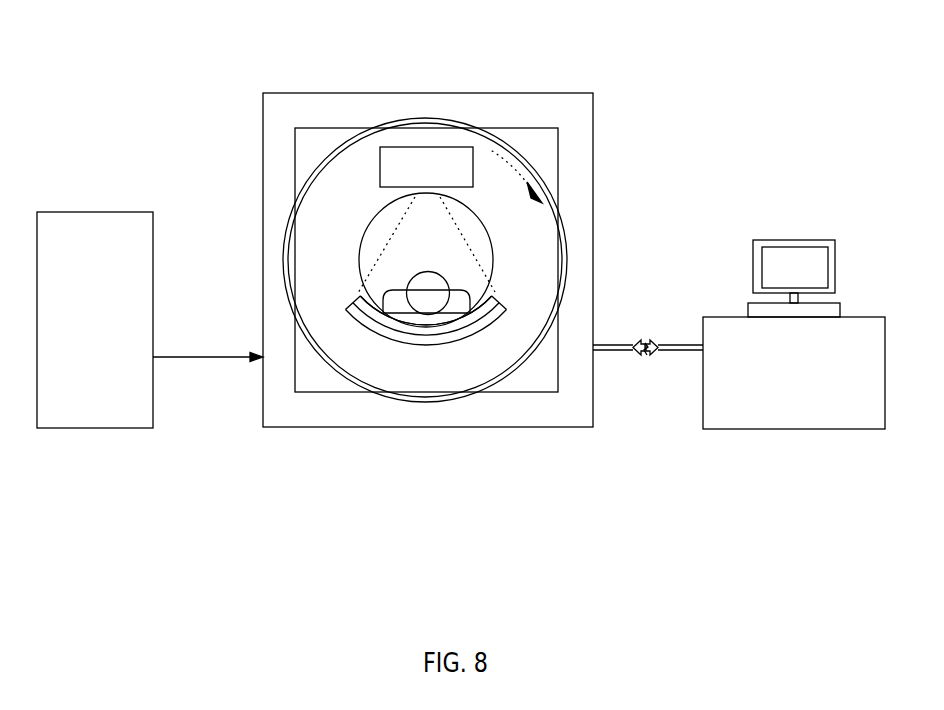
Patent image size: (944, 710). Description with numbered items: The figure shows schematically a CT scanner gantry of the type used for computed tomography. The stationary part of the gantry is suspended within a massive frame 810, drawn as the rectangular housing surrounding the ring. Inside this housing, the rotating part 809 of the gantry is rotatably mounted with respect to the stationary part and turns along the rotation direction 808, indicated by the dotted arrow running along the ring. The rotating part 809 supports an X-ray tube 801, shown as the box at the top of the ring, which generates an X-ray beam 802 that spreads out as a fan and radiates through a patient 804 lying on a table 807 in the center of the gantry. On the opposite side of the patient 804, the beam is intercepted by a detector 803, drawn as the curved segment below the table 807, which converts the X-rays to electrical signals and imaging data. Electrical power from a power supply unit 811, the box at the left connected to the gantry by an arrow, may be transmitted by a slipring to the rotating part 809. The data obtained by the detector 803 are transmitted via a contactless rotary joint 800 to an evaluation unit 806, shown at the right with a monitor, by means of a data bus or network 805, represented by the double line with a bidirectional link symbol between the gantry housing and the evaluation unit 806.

The contactless rotary joint 800 is at (565, 253).
The X-ray tube 801 is at (430, 167).
The X-ray beam 802 is at (387, 240).
The detector 803 is at (355, 300).
The patient 804 is at (470, 313).
The data bus or network 805 is at (647, 357).
The evaluation unit 806 is at (797, 403).
The table 807 is at (462, 300).
The rotation direction 808 is at (532, 163).
The rotating part 809 is at (543, 228).
The frame 810 is at (572, 183).
The power supply unit 811 is at (100, 232).